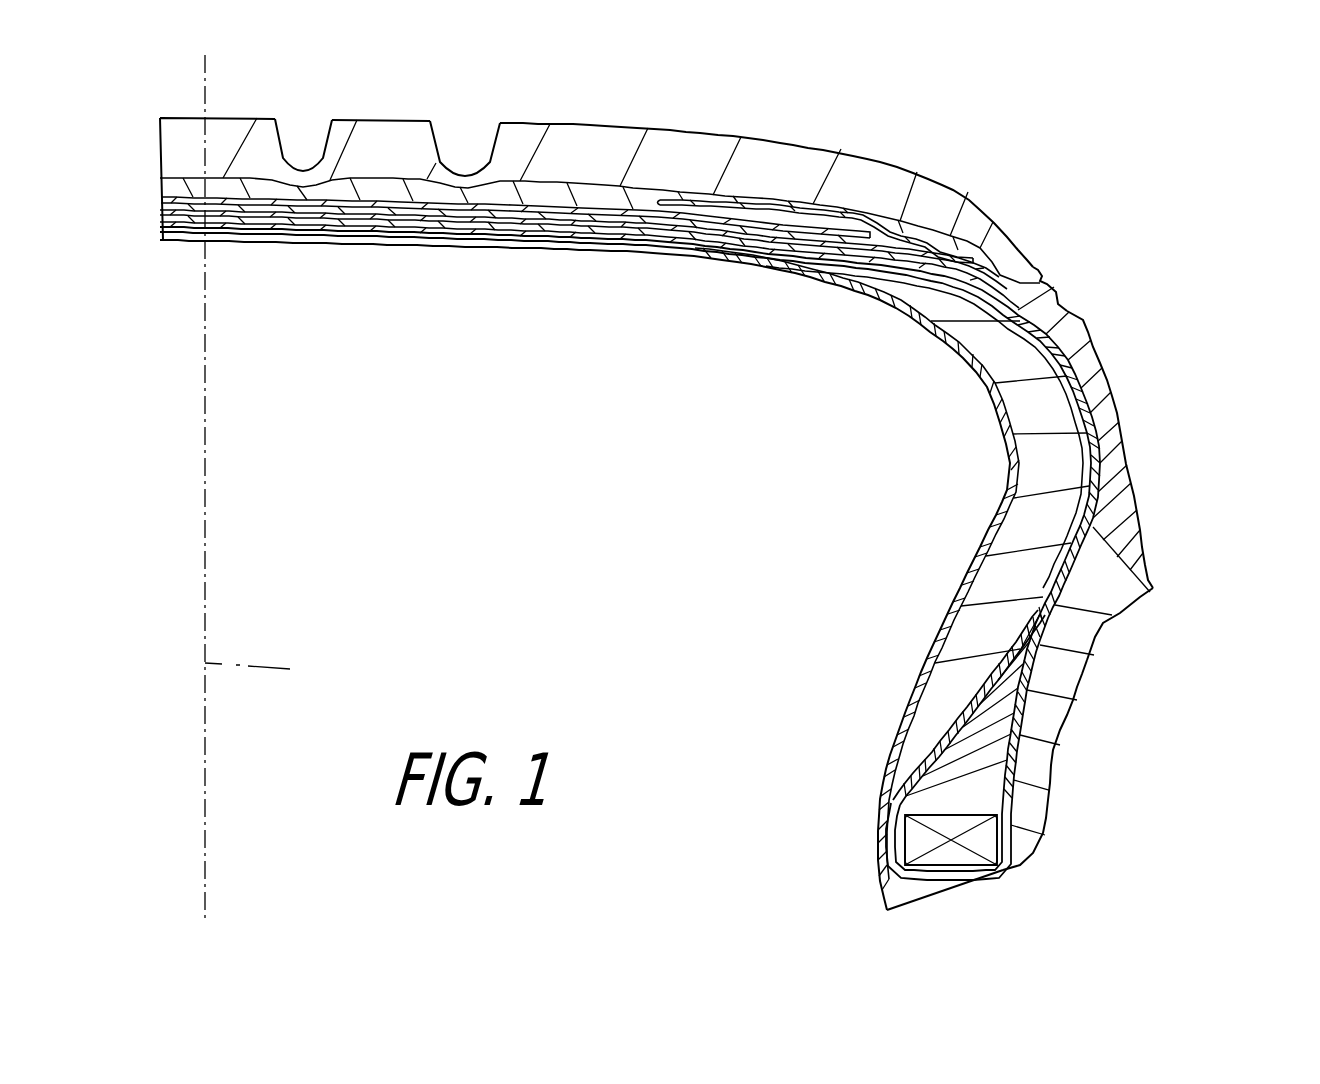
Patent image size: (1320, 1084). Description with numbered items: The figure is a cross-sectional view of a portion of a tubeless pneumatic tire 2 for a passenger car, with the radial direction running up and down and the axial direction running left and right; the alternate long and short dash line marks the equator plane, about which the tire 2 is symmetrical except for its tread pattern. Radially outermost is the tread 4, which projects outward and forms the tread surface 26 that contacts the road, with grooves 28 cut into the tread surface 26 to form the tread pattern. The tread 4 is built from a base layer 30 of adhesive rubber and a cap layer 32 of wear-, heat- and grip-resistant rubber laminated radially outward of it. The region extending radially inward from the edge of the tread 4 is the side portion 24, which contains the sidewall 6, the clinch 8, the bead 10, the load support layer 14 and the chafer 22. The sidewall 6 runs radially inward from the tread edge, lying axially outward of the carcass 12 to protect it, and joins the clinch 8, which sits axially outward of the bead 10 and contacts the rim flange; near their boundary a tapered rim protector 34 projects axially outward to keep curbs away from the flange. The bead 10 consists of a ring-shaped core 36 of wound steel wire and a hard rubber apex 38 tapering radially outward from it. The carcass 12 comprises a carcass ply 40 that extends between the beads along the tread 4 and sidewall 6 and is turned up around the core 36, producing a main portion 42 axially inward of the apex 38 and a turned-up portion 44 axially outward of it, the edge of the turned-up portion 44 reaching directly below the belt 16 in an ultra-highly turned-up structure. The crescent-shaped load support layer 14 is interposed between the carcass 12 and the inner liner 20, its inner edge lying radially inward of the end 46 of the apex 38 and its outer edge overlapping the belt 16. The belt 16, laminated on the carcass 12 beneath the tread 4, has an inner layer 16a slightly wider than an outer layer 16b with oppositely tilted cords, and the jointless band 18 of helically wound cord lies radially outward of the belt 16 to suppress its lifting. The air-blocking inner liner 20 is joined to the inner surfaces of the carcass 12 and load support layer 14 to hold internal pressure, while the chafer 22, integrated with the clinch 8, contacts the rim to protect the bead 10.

The pneumatic tire 2 is at (1058, 72).
The tread 4 is at (713, 123).
The sidewall 6 is at (1118, 427).
The clinch 8 is at (1037, 834).
The bead 10 is at (800, 747).
The carcass 12 is at (377, 230).
The load support layer 14 is at (983, 362).
The belt 16 is at (570, 325).
The inner layer 16a is at (472, 223).
The outer layer 16b is at (540, 217).
The band 18 is at (771, 207).
The inner liner 20 is at (300, 238).
The chafer 22 is at (907, 897).
The side portion 24 is at (1128, 354).
The tread surface 26 is at (588, 120).
The groove 28 is at (490, 150).
The base layer 30 is at (957, 243).
The cap layer 32 is at (867, 165).
The rim protector 34 is at (1153, 592).
The core 36 is at (912, 845).
The apex 38 is at (935, 775).
The carcass ply 40 is at (377, 230).
The main portion 42 is at (1022, 642).
The turned-up portion 44 is at (1037, 675).
The end of the apex 46 is at (1053, 577).